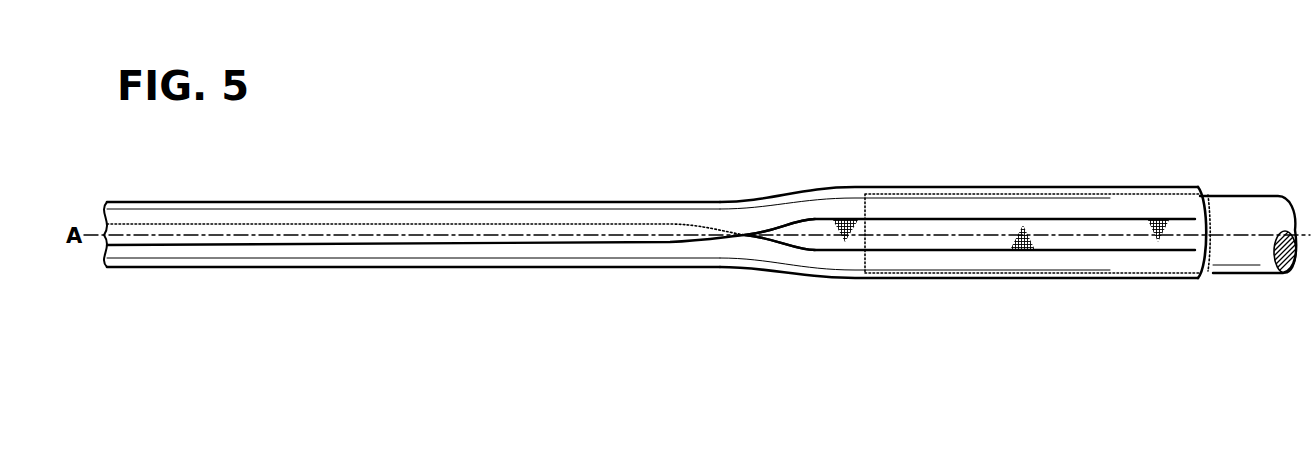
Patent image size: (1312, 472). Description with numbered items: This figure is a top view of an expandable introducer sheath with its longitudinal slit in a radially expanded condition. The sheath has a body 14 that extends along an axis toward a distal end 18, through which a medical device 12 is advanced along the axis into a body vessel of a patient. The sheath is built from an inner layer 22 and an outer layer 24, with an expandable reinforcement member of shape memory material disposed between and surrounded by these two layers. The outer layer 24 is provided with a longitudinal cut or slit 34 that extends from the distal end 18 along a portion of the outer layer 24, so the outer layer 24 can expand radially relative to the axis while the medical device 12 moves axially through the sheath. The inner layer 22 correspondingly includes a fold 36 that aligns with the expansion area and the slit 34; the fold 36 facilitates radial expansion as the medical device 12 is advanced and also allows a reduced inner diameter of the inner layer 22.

The medical device 12 is at (1240, 208).
The body 14 is at (577, 197).
The distal end 18 is at (1203, 262).
The inner layer 22 is at (1087, 234).
The outer layer 24 is at (760, 269).
The cut or slit 34 is at (817, 221).
The fold 36 is at (962, 237).